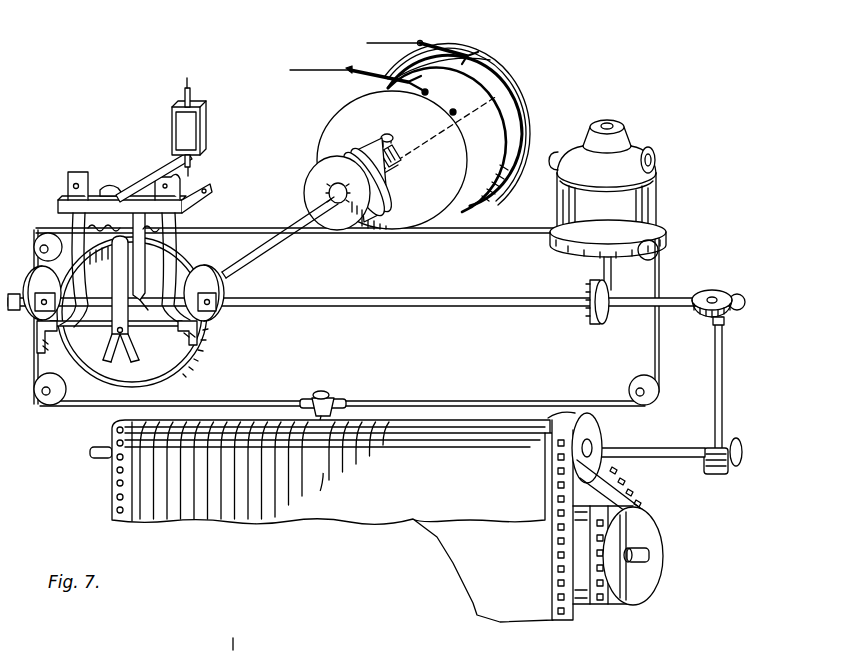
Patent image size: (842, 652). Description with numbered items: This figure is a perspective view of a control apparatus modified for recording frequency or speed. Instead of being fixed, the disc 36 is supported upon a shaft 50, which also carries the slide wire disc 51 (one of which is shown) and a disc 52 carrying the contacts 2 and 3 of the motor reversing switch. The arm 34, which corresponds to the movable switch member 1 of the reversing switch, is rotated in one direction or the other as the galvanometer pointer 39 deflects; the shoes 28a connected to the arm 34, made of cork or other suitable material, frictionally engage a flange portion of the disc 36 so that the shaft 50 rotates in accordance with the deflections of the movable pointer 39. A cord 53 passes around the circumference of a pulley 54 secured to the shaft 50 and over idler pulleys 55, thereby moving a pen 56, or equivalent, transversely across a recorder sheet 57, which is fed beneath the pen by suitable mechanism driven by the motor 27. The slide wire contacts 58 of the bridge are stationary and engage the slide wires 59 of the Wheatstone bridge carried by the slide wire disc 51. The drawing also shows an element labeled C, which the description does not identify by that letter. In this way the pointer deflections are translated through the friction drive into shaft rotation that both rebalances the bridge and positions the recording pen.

The movable switch member 1 is at (443, 46).
The contact 2 is at (487, 68).
The contact 3 is at (416, 64).
The electromagnet C is at (205, 106).
The motor 27 is at (626, 153).
The shoes 28a is at (206, 333).
The arm 34 is at (150, 340).
The disc 36 is at (157, 343).
The galvanometer pointer 39 is at (165, 163).
The shaft 50 is at (296, 210).
The slide wire disc 51 is at (349, 129).
The disc 52 is at (472, 125).
The cord 53 is at (487, 233).
The pulley 54 is at (347, 217).
The idler pulleys 55 is at (50, 240).
The pen 56 is at (332, 396).
The recorder sheet 57 is at (204, 512).
The slide wire contacts 58 is at (366, 72).
The slide wires 59 is at (487, 180).